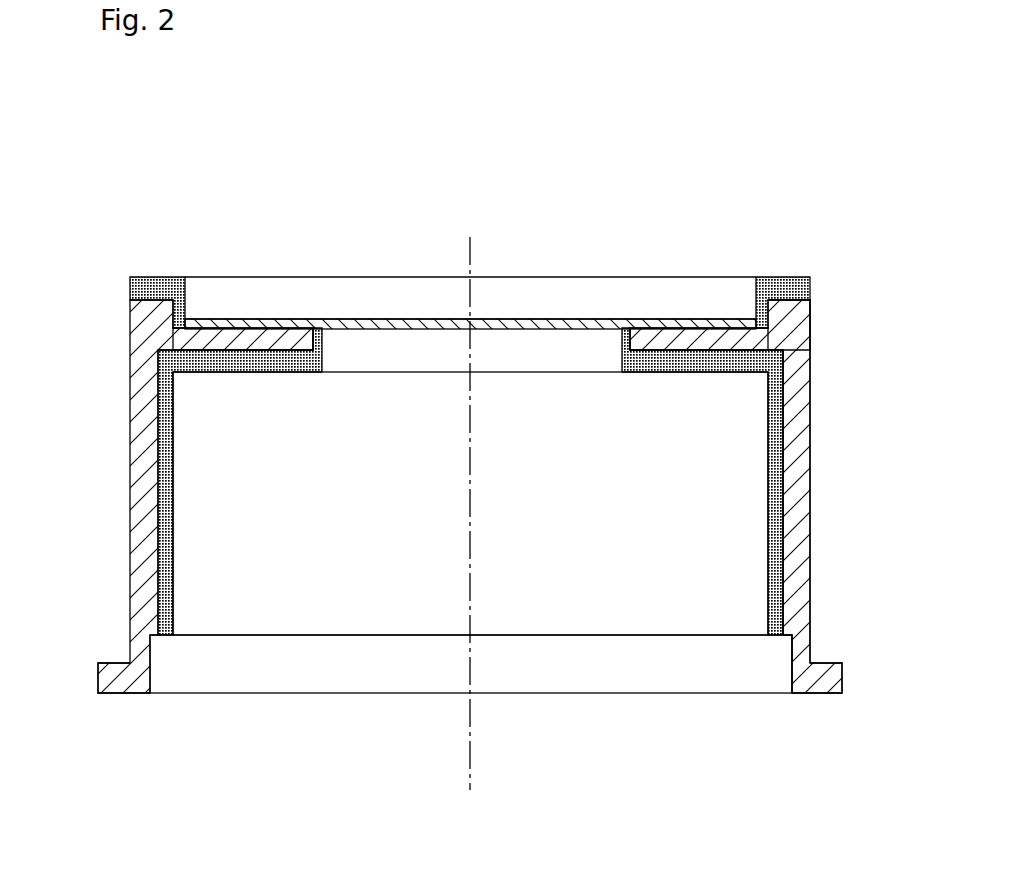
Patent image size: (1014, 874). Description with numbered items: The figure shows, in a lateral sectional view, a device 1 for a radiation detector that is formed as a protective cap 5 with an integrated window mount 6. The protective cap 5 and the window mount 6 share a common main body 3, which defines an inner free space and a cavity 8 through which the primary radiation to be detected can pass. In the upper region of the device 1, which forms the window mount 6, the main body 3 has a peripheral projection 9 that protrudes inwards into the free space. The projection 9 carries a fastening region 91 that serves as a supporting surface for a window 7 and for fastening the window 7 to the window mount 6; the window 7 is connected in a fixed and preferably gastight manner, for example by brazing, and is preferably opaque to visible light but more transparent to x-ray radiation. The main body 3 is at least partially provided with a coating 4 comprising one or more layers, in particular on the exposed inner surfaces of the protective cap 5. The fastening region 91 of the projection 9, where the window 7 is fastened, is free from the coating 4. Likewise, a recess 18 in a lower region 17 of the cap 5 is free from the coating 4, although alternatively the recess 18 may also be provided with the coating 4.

The device 1 is at (183, 181).
The main body 3 is at (148, 378).
The coating 4 is at (797, 281).
The protective cap 5 is at (797, 530).
The window mount 6 is at (780, 323).
The window 7 is at (408, 318).
The cavity 8 is at (252, 458).
The projection 9 is at (268, 334).
The fastening region 91 is at (657, 327).
The lower region 17 is at (813, 688).
The recess 18 is at (790, 683).